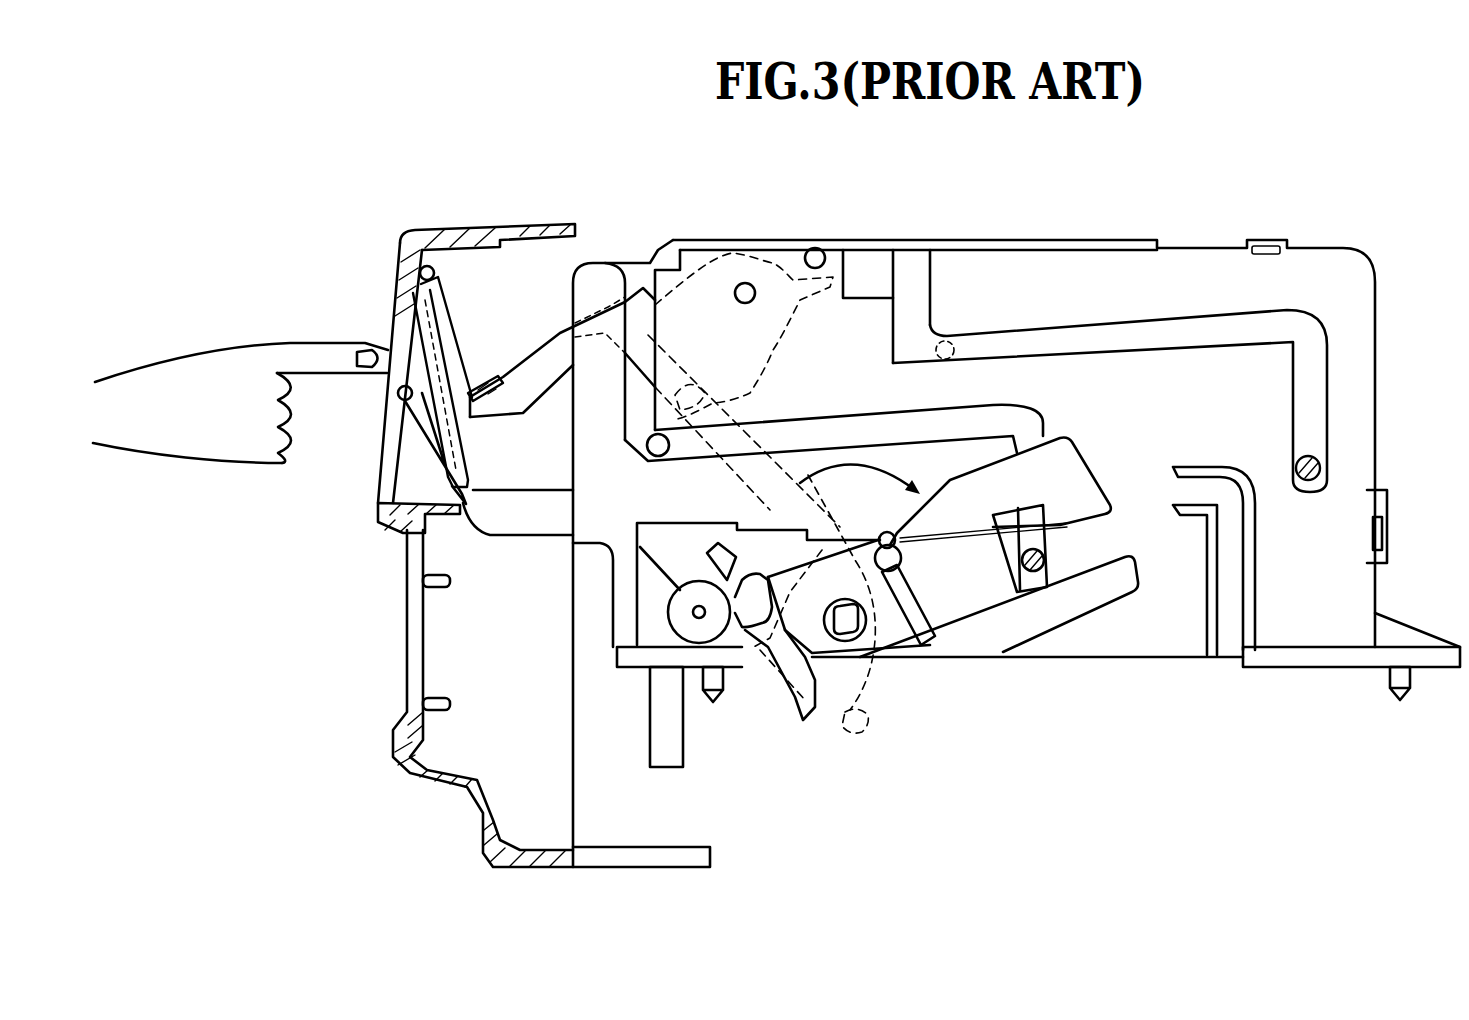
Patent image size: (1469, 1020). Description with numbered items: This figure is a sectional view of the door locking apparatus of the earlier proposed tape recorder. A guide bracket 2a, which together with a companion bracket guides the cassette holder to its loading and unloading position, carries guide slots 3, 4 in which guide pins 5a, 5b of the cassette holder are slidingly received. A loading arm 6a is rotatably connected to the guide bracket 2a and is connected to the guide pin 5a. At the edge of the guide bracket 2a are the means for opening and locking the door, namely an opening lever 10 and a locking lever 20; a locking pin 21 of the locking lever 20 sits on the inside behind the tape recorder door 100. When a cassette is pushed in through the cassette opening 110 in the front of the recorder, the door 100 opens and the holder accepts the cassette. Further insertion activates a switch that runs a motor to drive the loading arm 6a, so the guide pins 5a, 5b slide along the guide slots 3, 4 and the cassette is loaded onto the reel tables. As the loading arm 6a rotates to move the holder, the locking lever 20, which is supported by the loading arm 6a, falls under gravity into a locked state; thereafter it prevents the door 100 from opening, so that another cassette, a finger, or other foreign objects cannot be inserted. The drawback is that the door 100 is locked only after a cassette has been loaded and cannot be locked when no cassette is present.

The guide bracket 2a is at (1343, 252).
The guide slot 3 is at (945, 420).
The guide slot 4 is at (1115, 340).
The guide pin 5a is at (1035, 578).
The guide pin 5b is at (1322, 465).
The loading arm 6a is at (998, 625).
The opening lever 10 is at (505, 550).
The locking lever 20 is at (534, 338).
The locking pin 21 is at (496, 378).
The tape recorder door 100 is at (400, 333).
The cassette opening 110 is at (352, 441).